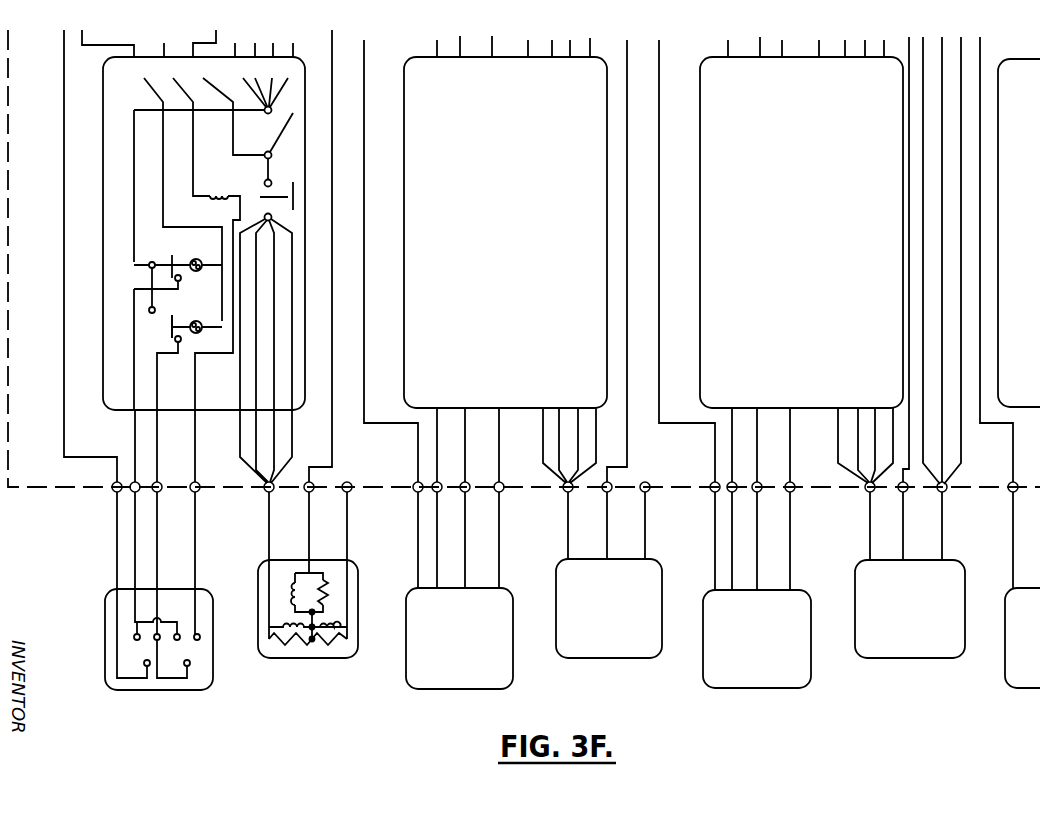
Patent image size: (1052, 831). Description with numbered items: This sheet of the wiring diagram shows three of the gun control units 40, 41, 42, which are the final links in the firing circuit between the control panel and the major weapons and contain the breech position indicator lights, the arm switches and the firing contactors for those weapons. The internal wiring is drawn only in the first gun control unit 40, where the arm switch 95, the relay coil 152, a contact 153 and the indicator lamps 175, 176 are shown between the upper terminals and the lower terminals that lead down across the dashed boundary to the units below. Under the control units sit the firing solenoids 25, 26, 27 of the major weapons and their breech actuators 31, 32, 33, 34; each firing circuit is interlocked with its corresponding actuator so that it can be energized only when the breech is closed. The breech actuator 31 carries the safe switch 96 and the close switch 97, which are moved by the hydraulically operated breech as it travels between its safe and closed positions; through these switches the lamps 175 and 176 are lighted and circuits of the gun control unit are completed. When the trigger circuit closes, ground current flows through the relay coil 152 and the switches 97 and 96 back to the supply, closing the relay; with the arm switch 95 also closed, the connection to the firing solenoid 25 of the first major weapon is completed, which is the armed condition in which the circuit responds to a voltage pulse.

The gun control unit 40 is at (103, 150).
The gun control unit 41 is at (404, 158).
The gun control unit 42 is at (700, 166).
The arm switch 95 is at (283, 132).
The relay coil 152 is at (219, 193).
The contact 153 is at (172, 327).
The lamp 175 is at (194, 259).
The lamp 176 is at (193, 334).
The safe switch 96 is at (155, 640).
The close switch 97 is at (199, 640).
The breech actuator 31 is at (176, 690).
The firing solenoid 25 is at (335, 652).
The breech actuator 32 is at (444, 677).
The firing solenoid 26 is at (613, 647).
The breech actuator 33 is at (767, 688).
The firing solenoid 27 is at (907, 652).
The breech actuator 34 is at (1015, 685).